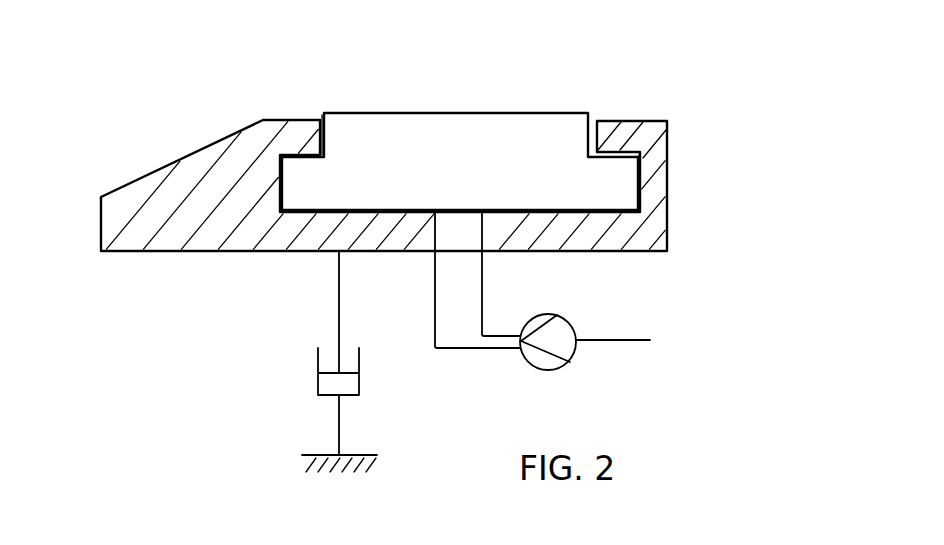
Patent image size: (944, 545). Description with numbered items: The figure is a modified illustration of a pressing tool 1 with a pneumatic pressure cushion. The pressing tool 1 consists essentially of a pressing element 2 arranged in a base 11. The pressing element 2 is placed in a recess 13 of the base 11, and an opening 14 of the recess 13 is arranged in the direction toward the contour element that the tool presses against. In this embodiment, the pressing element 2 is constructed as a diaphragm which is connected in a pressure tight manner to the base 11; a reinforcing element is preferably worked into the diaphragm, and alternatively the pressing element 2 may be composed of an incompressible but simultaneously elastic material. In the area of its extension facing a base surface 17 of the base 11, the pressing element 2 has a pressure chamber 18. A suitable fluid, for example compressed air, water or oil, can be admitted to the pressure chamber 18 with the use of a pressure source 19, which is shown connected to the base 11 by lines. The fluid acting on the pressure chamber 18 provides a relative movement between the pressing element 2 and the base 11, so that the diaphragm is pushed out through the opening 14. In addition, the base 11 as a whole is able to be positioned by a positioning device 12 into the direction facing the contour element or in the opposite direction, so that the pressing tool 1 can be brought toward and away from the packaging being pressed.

The pressing tool 1 is at (697, 130).
The pressing element 2 is at (555, 112).
The base 11 is at (152, 228).
The positioning device 12 is at (320, 373).
The recess 13 is at (610, 186).
The opening 14 is at (323, 111).
The base surface 17 is at (587, 213).
The pressure chamber 18 is at (418, 160).
The pressure source 19 is at (560, 353).